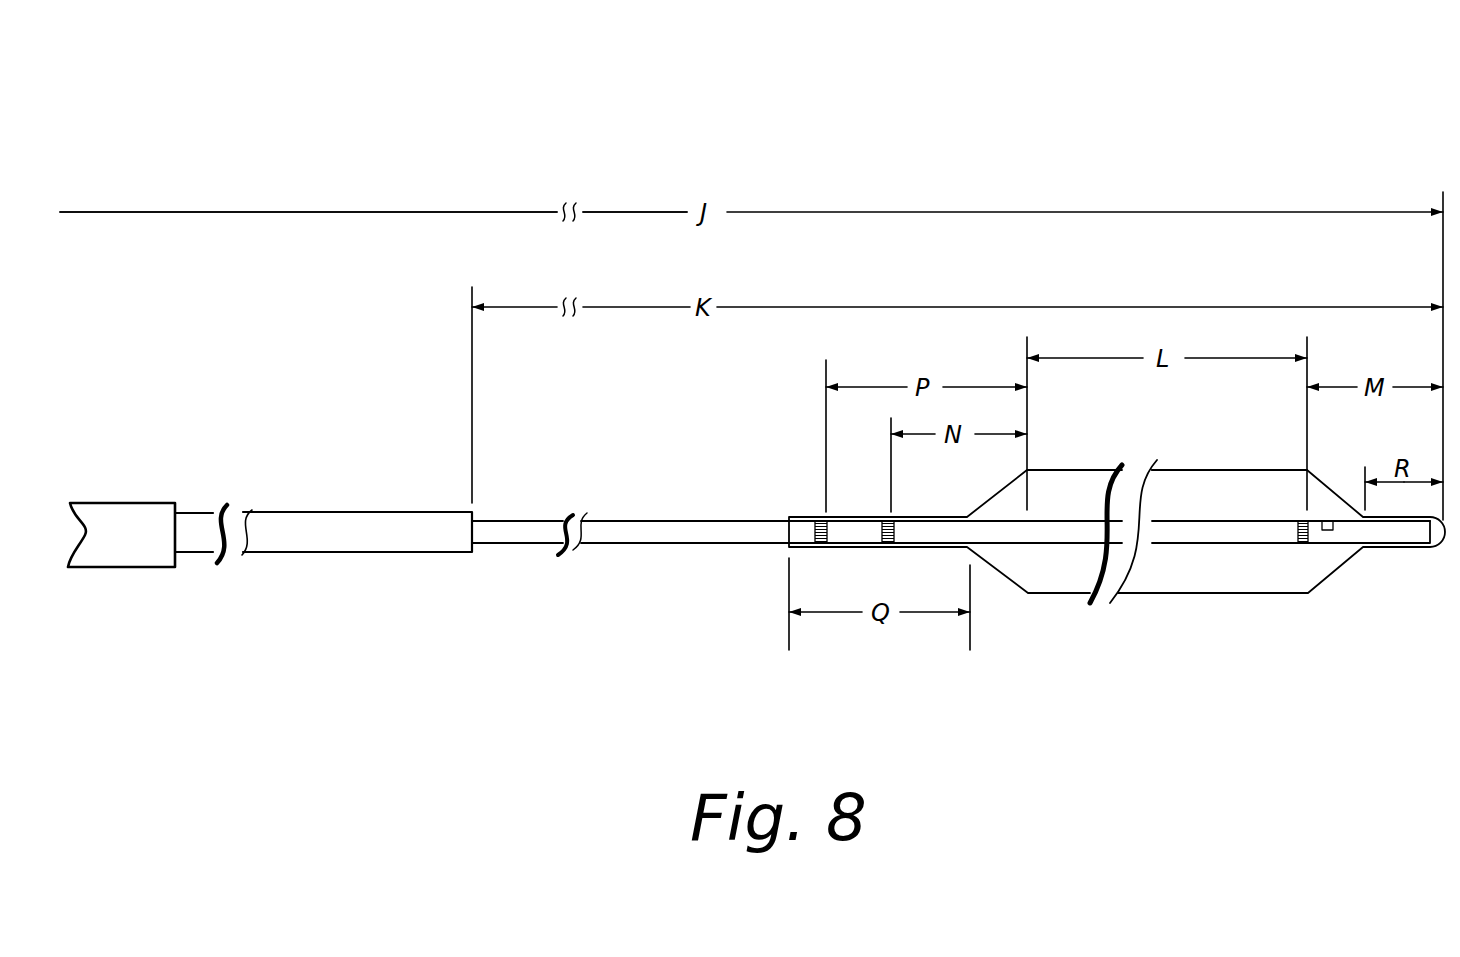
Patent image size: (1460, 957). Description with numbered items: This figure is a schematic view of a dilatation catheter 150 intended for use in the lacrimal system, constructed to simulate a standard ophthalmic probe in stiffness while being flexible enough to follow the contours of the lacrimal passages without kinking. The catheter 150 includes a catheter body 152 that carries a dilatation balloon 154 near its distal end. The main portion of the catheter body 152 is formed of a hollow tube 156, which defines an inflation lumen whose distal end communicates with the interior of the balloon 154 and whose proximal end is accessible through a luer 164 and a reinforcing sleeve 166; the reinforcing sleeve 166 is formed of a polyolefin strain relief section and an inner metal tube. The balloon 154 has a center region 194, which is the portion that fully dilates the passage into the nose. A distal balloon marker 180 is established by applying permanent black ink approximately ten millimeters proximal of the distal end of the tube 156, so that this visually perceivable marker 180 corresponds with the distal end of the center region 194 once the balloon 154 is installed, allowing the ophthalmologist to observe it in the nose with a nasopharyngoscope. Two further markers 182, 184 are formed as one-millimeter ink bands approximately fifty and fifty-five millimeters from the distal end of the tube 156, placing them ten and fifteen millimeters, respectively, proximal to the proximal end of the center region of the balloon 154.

The dilatation catheter 150 is at (1146, 182).
The luer 164 is at (123, 550).
The reinforcing sleeve 166 is at (333, 556).
The hollow tube 156 is at (680, 519).
The catheter body 152 is at (677, 549).
The dilatation balloon 154 is at (1160, 600).
The center region 194 is at (1228, 470).
The marker 184 is at (818, 547).
The marker 182 is at (887, 547).
The distal balloon marker 180 is at (1302, 547).